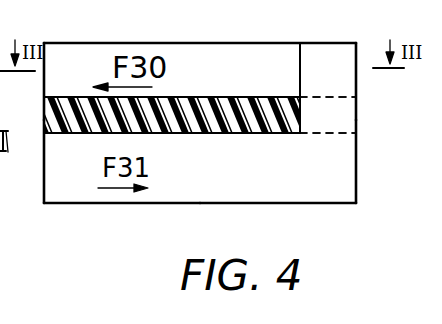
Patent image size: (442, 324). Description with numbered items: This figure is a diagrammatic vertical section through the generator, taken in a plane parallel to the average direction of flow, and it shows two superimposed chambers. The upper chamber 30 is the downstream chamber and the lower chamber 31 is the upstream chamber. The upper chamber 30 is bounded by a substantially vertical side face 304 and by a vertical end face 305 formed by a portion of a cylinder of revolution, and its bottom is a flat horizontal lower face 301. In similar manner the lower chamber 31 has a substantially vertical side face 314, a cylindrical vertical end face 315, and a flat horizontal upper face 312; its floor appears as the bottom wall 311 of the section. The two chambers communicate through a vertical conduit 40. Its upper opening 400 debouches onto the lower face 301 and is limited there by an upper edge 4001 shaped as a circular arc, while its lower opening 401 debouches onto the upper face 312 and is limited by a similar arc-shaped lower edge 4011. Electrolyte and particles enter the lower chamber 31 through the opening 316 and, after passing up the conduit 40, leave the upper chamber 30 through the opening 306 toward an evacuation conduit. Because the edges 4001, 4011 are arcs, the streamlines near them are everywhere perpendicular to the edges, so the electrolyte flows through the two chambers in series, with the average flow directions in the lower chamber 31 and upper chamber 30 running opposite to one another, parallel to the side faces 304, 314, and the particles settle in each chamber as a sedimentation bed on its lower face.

The upper chamber 30 is at (220, 72).
The lower chamber 31 is at (207, 171).
The lower face 301 is at (210, 97).
The side face 304 is at (140, 54).
The end face 305 is at (357, 50).
The opening 306 is at (45, 78).
The bottom wall 311 is at (209, 203).
The upper face 312 is at (237, 134).
The side face 314 is at (164, 189).
The end face 315 is at (357, 178).
The opening 316 is at (45, 178).
The vertical conduit 40 is at (338, 117).
The upper opening 400 is at (309, 77).
The lower opening 401 is at (303, 133).
The upper edge 4001 is at (300, 97).
The lower edge 4011 is at (300, 134).